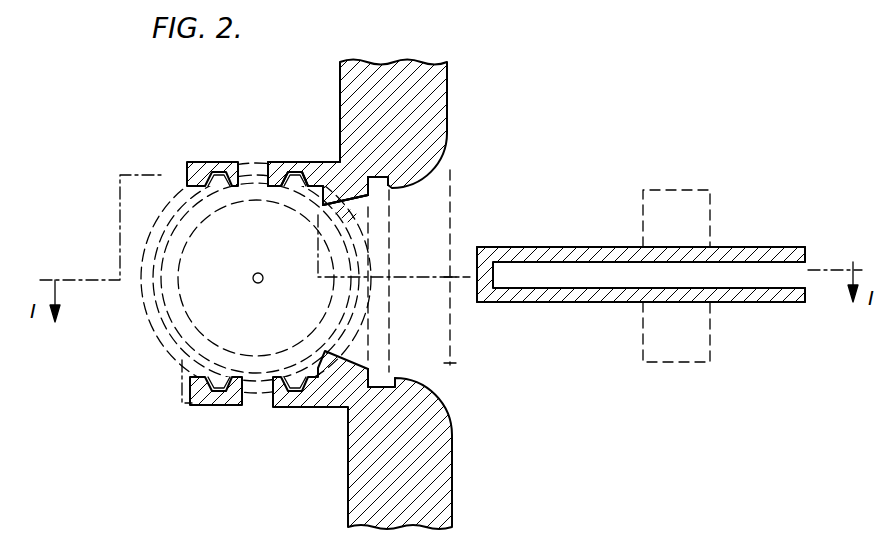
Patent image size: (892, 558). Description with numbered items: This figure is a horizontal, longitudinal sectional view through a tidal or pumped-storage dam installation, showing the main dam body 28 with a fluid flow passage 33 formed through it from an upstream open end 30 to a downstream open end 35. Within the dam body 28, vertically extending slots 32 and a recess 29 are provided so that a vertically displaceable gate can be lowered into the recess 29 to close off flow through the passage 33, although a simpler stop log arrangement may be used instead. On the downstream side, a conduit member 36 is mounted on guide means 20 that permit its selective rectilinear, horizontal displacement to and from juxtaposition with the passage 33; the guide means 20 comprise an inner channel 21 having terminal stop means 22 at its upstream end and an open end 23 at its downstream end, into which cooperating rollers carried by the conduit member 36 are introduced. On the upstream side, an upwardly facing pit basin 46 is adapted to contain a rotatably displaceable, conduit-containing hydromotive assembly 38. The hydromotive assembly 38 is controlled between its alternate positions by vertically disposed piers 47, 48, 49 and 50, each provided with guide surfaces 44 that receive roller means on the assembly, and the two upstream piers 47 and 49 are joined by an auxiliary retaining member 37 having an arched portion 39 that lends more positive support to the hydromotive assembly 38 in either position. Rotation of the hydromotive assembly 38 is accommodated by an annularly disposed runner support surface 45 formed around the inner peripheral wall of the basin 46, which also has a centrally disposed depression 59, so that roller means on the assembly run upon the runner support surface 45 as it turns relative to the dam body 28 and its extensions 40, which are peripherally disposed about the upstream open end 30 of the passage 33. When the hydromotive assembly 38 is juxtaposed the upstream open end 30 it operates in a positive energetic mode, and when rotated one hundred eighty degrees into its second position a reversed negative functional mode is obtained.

The guide means 20 is at (597, 248).
The inner channel 21 is at (626, 283).
The terminal stop means 22 is at (480, 292).
The open end 23 is at (806, 260).
The dam body 28 is at (406, 110).
The recess 29 is at (392, 362).
The upstream open end 30 is at (332, 198).
The slots 32 is at (390, 190).
The fluid flow passage 33 is at (434, 250).
The downstream open end 35 is at (452, 363).
The conduit member 36 is at (688, 220).
The auxiliary retaining member 37 is at (170, 188).
The hydromotive assembly 38 is at (158, 318).
The arched portion 39 is at (170, 366).
The extensions 40 is at (358, 186).
The guide surfaces 44 is at (284, 187).
The runner support surface 45 is at (203, 340).
The pit basin 46 is at (306, 310).
The pier 47 is at (227, 162).
The pier 48 is at (313, 162).
The pier 49 is at (221, 406).
The pier 50 is at (321, 408).
The depression 59 is at (263, 276).